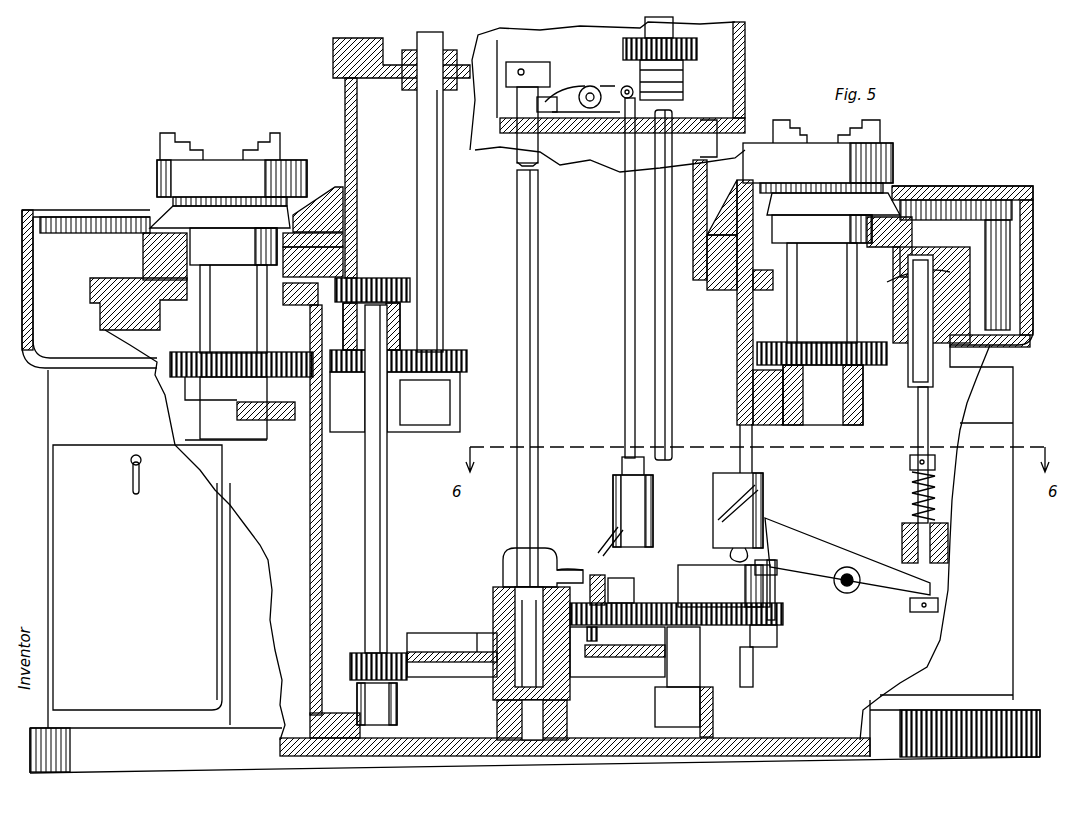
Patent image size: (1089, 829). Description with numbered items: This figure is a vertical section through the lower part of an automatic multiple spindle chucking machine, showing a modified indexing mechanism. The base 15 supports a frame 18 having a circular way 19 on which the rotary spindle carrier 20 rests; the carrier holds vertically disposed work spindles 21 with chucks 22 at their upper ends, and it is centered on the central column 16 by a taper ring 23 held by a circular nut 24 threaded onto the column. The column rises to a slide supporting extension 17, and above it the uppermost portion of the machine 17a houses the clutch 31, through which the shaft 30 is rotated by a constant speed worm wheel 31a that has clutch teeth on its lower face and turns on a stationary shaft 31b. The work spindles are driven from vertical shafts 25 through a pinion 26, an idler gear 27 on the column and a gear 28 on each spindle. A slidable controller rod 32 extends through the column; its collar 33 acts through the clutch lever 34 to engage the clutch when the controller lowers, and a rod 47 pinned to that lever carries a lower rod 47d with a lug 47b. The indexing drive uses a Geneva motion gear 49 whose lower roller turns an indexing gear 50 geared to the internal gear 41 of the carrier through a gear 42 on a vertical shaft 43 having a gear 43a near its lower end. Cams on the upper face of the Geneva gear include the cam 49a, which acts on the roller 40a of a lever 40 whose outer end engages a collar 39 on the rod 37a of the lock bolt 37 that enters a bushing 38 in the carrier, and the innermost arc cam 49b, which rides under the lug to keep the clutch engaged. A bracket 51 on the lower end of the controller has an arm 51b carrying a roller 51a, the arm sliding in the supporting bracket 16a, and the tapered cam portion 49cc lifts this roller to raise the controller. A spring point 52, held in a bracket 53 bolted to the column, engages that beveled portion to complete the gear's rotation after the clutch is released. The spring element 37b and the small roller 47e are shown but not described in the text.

The base 15 is at (1040, 722).
The central column 16 is at (346, 110).
The supporting bracket 16a is at (495, 605).
The extension 17 is at (336, 54).
The uppermost portion of the machine 17a is at (745, 78).
The frame 18 is at (1012, 393).
The circular way 19 is at (952, 305).
The spindle carrier 20 is at (122, 280).
The work spindles 21 is at (228, 318).
The chucks 22 is at (168, 145).
The taper ring 23 is at (352, 232).
The circular nut 24 is at (330, 190).
The vertical shafts 25 is at (447, 292).
The pinion 26 is at (467, 358).
The idler gear 27 is at (371, 326).
The gear 28 is at (878, 338).
The shaft 30 is at (672, 355).
The clutch 31 is at (684, 92).
The constant speed worm wheel 31a is at (678, 52).
The stationary shaft 31b is at (687, 29).
The controller 32 is at (538, 262).
The collar 33 is at (510, 62).
The clutch lever 34 is at (568, 95).
The lock bolt 37 is at (933, 373).
The rod 37a is at (918, 420).
The spring 37b is at (910, 495).
The bushings 38 is at (938, 253).
The collar 39 is at (910, 610).
The lever 40 is at (878, 585).
The roller 40a is at (780, 565).
The internal gear 41 is at (300, 278).
The gear 42 is at (372, 279).
The vertical shaft 43 is at (390, 560).
The gear 43a is at (350, 660).
The rod 47 is at (625, 340).
The lug 47b is at (600, 552).
The rod 47d is at (622, 465).
The roller 47e is at (623, 88).
The Geneva motion gear 49 is at (785, 617).
The cam 49a is at (606, 680).
The arc shaped cam 49b is at (622, 590).
The tapered portion 49cc is at (613, 545).
The indexing gear 50 is at (458, 677).
The bracket 51 is at (503, 560).
The roller 51a is at (542, 548).
The arm 51b is at (503, 575).
The spring point 52 is at (750, 553).
The bracket 53 is at (773, 525).